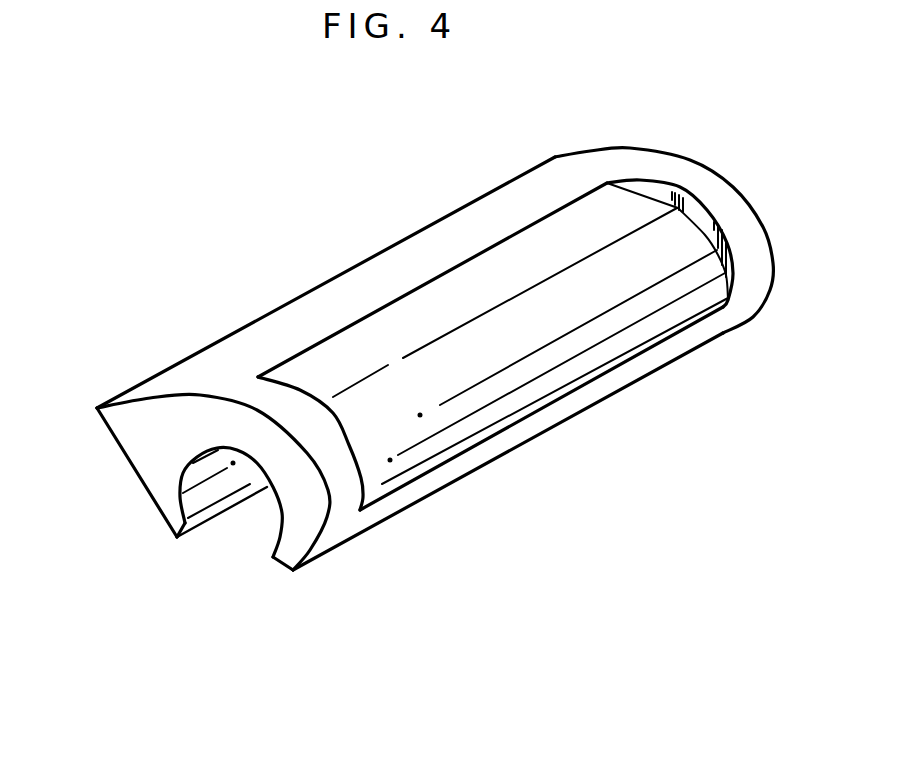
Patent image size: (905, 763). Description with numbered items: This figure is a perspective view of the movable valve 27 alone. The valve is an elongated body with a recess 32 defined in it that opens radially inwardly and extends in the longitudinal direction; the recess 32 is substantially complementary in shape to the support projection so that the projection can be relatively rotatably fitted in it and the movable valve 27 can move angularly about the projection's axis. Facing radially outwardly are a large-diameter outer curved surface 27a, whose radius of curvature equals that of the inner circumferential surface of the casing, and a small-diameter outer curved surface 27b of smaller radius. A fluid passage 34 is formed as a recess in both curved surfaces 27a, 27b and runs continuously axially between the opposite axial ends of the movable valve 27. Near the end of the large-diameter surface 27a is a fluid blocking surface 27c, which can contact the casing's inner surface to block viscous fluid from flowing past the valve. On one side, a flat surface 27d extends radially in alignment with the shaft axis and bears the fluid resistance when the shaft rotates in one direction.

The movable valve 27 is at (409, 362).
The large-diameter outer curved surface 27a is at (208, 395).
The small-diameter outer curved surface 27b is at (350, 474).
The fluid blocking surface 27c is at (283, 312).
The flat surface 27d is at (127, 467).
The recess 32 is at (277, 521).
The fluid passage 34 is at (493, 363).